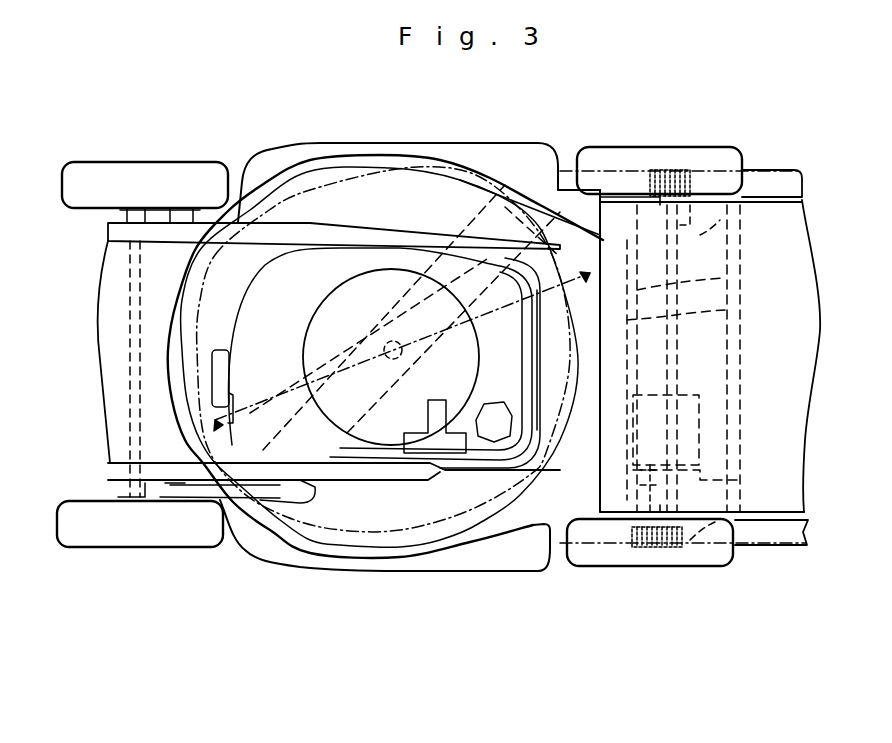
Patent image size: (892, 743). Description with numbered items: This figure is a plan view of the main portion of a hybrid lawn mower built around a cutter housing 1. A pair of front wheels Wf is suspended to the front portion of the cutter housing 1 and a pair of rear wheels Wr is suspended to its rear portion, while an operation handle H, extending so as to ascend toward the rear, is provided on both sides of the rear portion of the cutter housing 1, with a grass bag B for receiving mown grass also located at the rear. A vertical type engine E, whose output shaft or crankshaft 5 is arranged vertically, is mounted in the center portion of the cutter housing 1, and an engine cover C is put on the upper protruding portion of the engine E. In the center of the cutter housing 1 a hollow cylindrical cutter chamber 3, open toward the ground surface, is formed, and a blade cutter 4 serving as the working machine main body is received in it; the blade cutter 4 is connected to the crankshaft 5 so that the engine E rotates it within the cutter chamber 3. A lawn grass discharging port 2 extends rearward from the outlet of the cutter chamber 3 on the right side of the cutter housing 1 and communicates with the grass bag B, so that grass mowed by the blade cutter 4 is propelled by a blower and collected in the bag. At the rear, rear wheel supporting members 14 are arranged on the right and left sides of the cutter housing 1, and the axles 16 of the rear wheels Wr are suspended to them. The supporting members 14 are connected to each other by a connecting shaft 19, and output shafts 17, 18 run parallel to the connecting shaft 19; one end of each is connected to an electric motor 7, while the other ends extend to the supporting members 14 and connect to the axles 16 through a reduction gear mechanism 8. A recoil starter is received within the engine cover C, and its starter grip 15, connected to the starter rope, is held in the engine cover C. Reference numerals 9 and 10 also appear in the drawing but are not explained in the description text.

The cutter housing 1 is at (110, 308).
The lawn grass discharging port 2 is at (553, 360).
The cutter chamber 3 is at (387, 178).
The blade cutter 4 is at (297, 462).
The crankshaft 5 is at (414, 347).
The electric motor 7 is at (700, 425).
The reduction gear mechanism 8 is at (703, 168).
The housing rim 9 is at (538, 268).
The front axle bar 10 is at (175, 243).
The rear wheel supporting member 14 is at (710, 228).
The starter grip 15 is at (420, 455).
The axle 16 is at (637, 205).
The output shaft 17 is at (700, 473).
The output shaft 18 is at (705, 283).
The connecting shaft 19 is at (705, 312).
The grass bag B is at (790, 365).
The engine cover C is at (340, 300).
The engine E is at (215, 380).
The operation handle H is at (785, 178).
The front wheel Wf is at (139, 178).
The rear wheel Wr is at (601, 172).